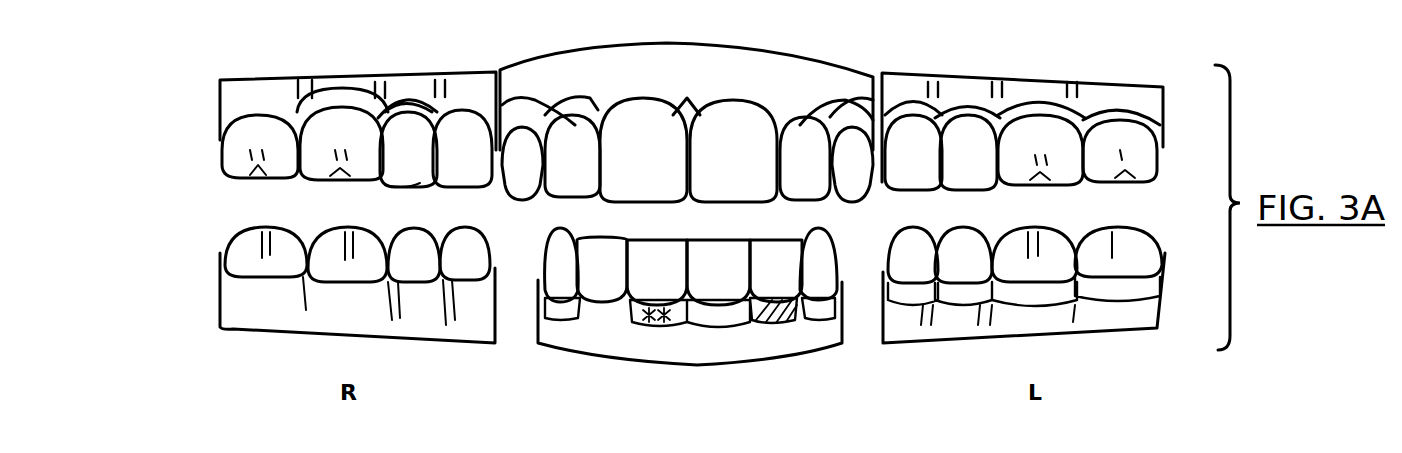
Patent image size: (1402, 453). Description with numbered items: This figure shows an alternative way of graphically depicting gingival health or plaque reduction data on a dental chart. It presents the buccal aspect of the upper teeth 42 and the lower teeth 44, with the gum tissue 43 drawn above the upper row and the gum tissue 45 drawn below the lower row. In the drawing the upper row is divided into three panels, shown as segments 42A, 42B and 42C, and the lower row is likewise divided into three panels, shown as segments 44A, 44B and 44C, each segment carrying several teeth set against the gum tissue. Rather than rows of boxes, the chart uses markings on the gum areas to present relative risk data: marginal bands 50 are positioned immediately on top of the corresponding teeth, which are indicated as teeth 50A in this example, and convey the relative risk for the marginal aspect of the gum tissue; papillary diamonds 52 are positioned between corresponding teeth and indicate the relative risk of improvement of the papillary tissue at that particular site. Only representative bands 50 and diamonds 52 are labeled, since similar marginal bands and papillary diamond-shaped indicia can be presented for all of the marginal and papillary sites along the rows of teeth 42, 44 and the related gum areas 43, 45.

The upper teeth 42 is at (220, 120).
The right upper template segment 42A is at (297, 74).
The anterior upper template segment 42B is at (630, 43).
The left upper template segment 42C is at (1047, 74).
The gum tissue 43 is at (226, 88).
The marginal bands 50 is at (340, 93).
The papillary diamonds 52 is at (380, 120).
The corresponding teeth 50A is at (403, 172).
The lower teeth 44 is at (220, 295).
The right lower template segment 44A is at (343, 338).
The anterior lower template segment 44B is at (695, 365).
The left lower template segment 44C is at (1013, 342).
The gum tissue 45 is at (240, 315).